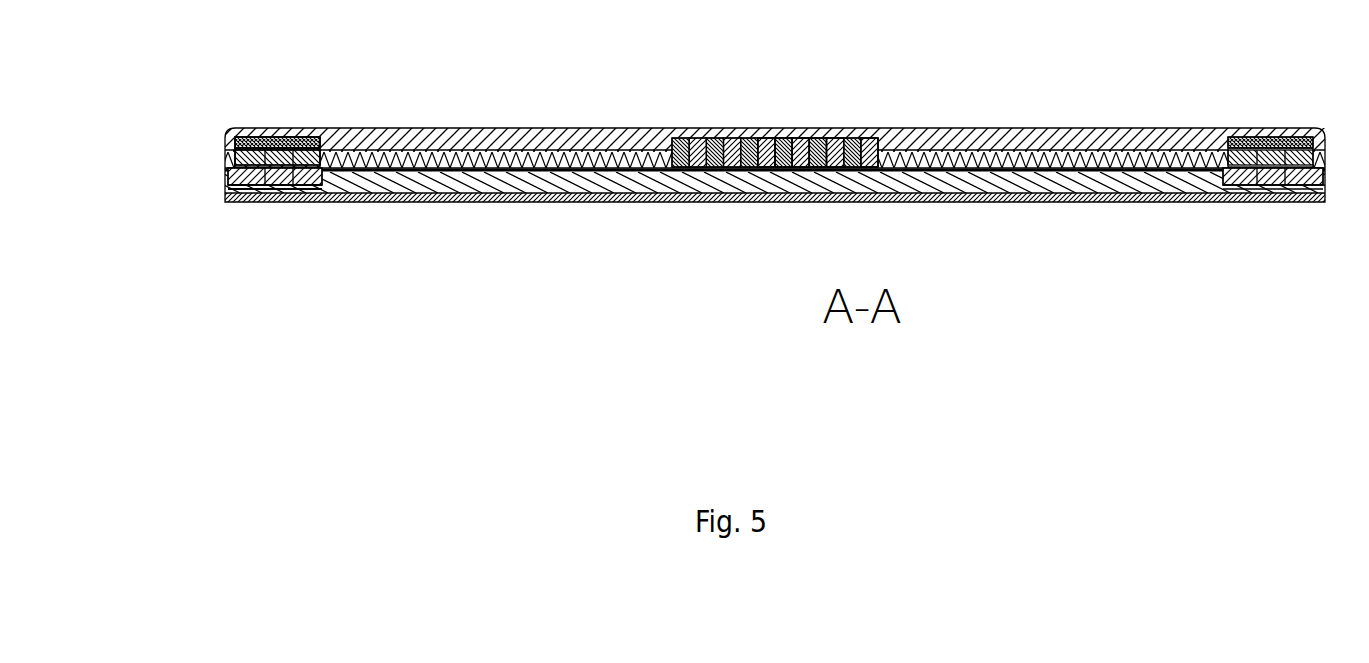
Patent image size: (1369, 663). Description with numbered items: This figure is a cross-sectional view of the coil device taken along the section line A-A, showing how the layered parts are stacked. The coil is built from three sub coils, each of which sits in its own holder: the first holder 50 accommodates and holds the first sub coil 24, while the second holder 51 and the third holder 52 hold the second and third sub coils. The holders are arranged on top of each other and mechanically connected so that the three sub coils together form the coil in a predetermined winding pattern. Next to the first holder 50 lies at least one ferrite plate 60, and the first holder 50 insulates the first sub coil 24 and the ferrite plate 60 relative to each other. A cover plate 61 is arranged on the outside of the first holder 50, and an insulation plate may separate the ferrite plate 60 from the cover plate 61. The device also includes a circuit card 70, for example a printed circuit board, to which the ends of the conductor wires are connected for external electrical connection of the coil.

The first sub coil 24 is at (228, 183).
The first holder 50 is at (998, 175).
The second holder 51 is at (1055, 160).
The third holder 52 is at (978, 128).
The ferrite plate 60 is at (443, 178).
The cover plate 61 is at (937, 203).
The circuit card 70 is at (273, 202).